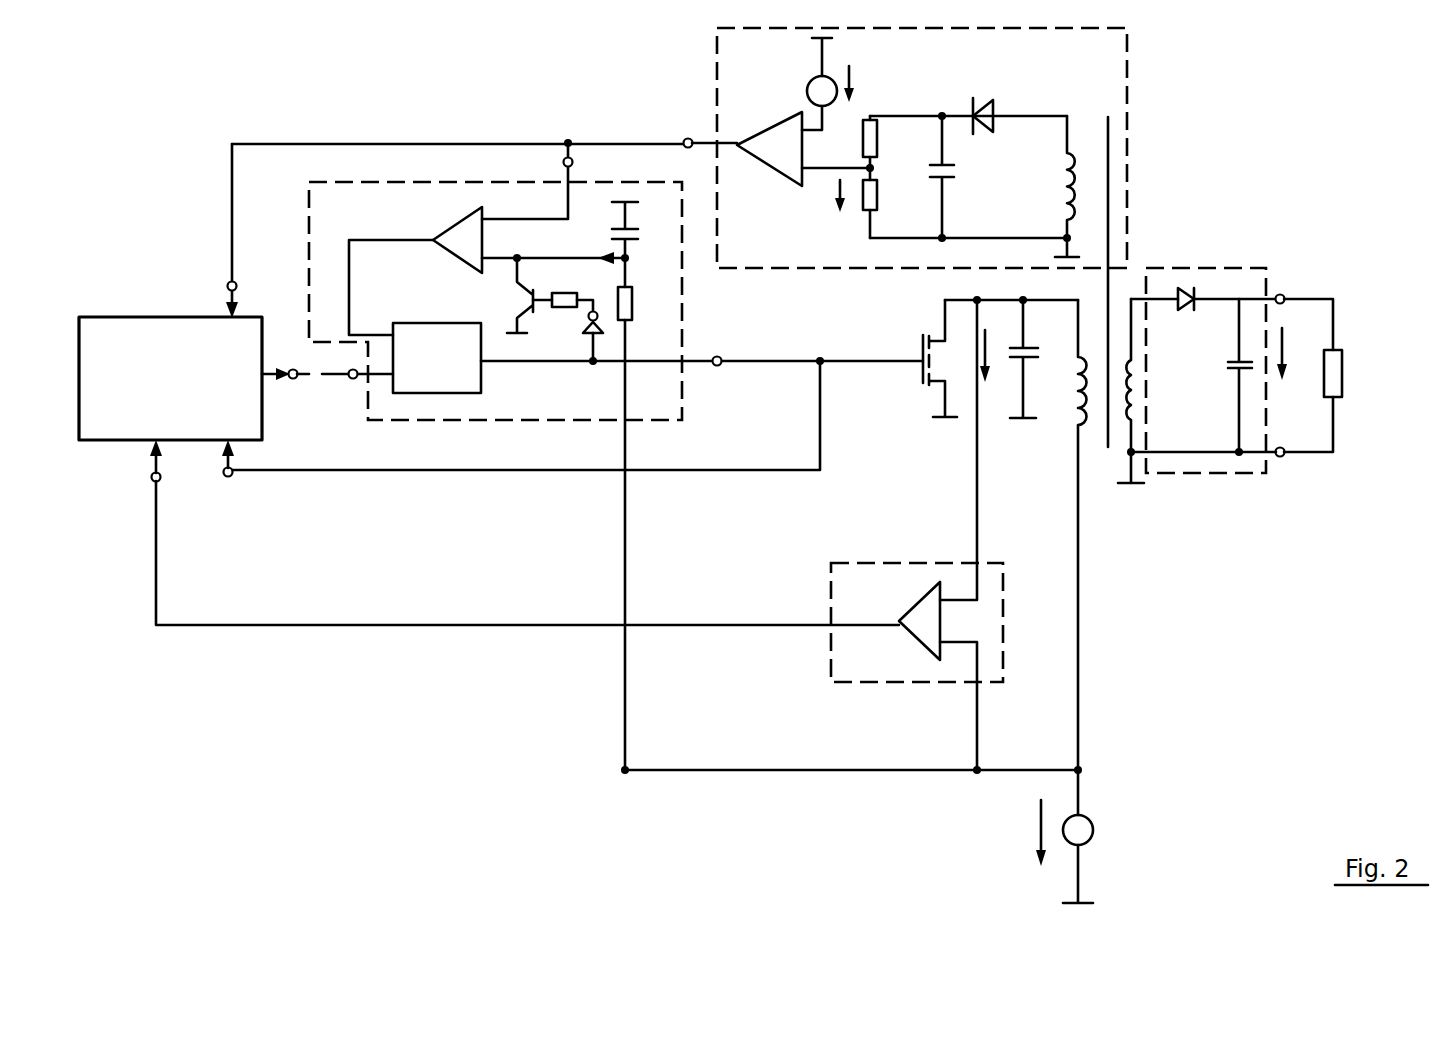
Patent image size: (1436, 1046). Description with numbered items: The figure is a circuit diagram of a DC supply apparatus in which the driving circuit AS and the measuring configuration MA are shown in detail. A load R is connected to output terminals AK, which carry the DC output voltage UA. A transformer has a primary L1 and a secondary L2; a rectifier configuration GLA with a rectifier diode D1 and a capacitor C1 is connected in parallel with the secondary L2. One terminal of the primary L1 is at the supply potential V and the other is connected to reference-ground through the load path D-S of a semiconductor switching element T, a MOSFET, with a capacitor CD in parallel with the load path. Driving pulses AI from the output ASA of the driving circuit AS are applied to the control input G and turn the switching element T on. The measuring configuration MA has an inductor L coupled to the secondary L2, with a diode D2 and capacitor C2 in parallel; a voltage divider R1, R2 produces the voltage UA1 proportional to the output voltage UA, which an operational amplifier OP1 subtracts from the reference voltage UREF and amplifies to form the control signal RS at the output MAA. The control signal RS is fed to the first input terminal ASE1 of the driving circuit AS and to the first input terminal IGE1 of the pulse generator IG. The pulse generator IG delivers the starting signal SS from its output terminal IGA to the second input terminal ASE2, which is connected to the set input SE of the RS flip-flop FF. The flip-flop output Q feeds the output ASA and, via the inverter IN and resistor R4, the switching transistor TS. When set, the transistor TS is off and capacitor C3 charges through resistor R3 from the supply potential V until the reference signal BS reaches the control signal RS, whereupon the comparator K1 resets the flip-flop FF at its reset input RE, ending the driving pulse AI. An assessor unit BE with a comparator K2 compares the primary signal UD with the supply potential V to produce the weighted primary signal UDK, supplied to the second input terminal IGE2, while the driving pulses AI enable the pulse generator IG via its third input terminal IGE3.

The pulse generator IG is at (170, 378).
The first input terminal of the pulse generator IGE1 is at (200, 231).
The second input terminal of the pulse generator IGE2 is at (127, 467).
The third input terminal of the pulse generator IGE3 is at (202, 467).
The output terminal of the pulse generator IGA is at (287, 386).
The starting signal SS is at (280, 359).
The first input terminal of the driving circuit ASE1 is at (568, 181).
The second input terminal of the driving circuit ASE2 is at (355, 386).
The driving circuit AS is at (682, 420).
The comparator K1 is at (417, 266).
The RS flip-flop FF is at (437, 342).
The reset input RE is at (416, 340).
The set input SE is at (415, 376).
The output of the flip-flop Q is at (466, 361).
The switching transistor TS is at (510, 295).
The resistor R4 is at (563, 287).
The inverter IN is at (576, 337).
The resistor R3 is at (643, 514).
The capacitor C3 is at (644, 225).
The reference signal BS is at (553, 246).
The control signal RS is at (458, 129).
The output terminal of the measuring configuration MAA is at (700, 128).
The measuring configuration MA is at (1125, 88).
The operational amplifier OP1 is at (770, 155).
The reference voltage UREF is at (856, 84).
The divided voltage U'A UA1 is at (826, 195).
The voltage divider resistor R1 is at (858, 148).
The voltage divider resistor R2 is at (888, 209).
The capacitor C2 is at (962, 177).
The diode D2 is at (995, 131).
The inductor L is at (1056, 195).
The output of the driving circuit ASA is at (702, 346).
The driving pulses AI is at (529, 419).
The semiconductor switching element T is at (988, 356).
The control input G is at (908, 345).
The drain D is at (961, 330).
The source S is at (959, 385).
The primary signal UD is at (984, 450).
The capacitor CD is at (1038, 359).
The primary L1 is at (1067, 535).
The comparator K2 is at (930, 673).
The assessor unit BE is at (831, 682).
The weighted primary signal UDK is at (527, 553).
The supply potential V is at (1064, 846).
The rectifier configuration GLA is at (1266, 268).
The secondary L2 is at (1145, 411).
The rectifier diode D1 is at (1203, 317).
The capacitor C1 is at (1225, 377).
The output terminals AK is at (1229, 362).
The output voltage UA is at (1297, 354).
The load R is at (1325, 375).